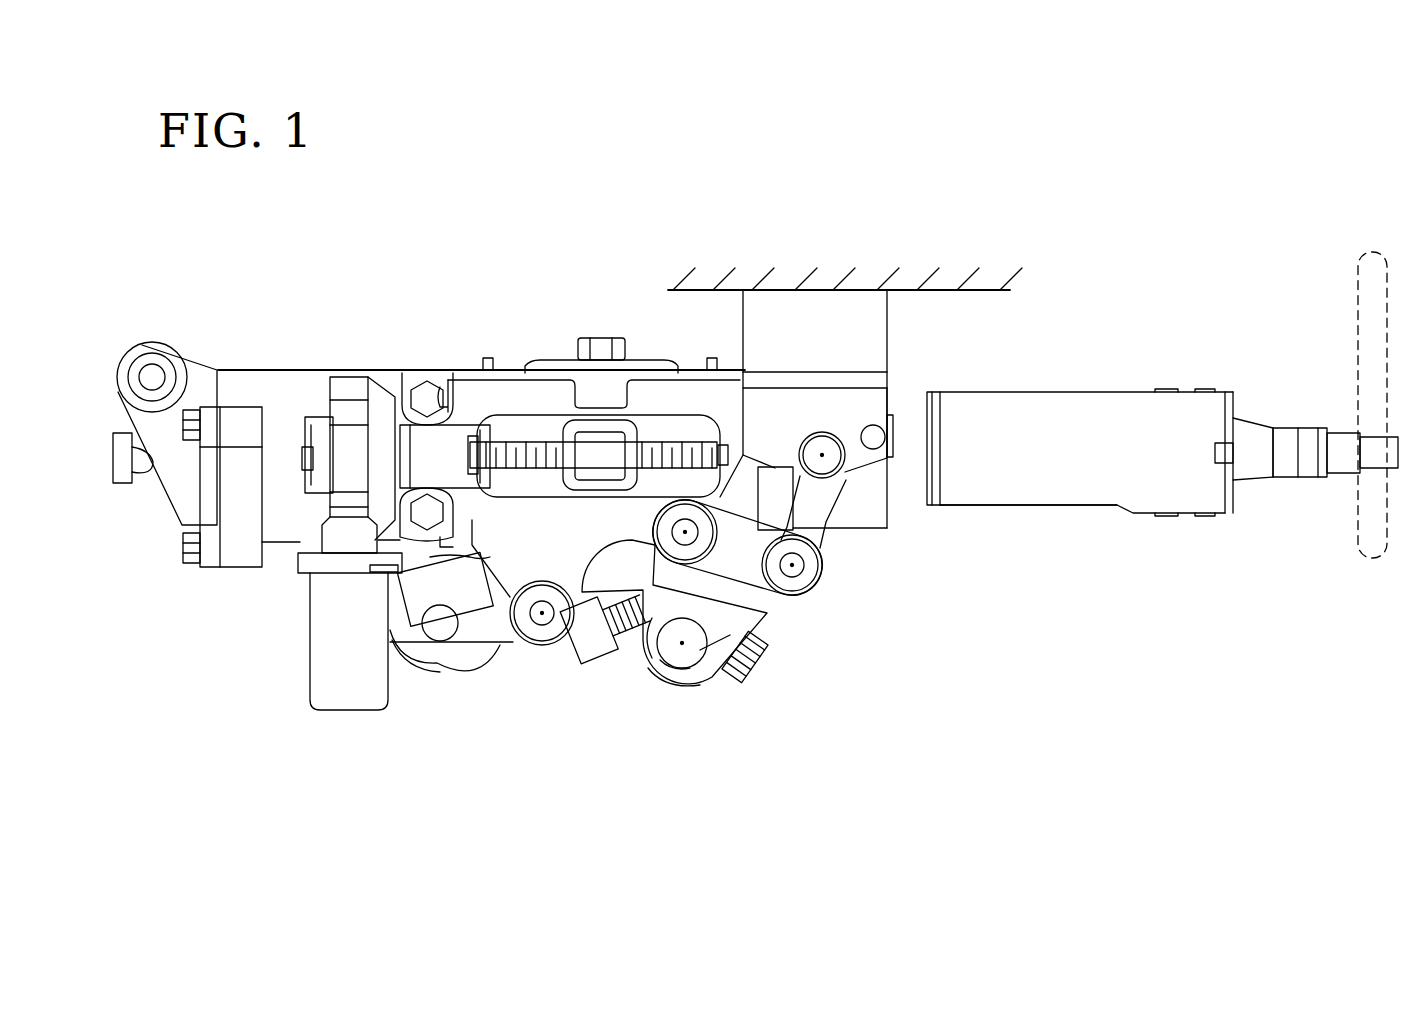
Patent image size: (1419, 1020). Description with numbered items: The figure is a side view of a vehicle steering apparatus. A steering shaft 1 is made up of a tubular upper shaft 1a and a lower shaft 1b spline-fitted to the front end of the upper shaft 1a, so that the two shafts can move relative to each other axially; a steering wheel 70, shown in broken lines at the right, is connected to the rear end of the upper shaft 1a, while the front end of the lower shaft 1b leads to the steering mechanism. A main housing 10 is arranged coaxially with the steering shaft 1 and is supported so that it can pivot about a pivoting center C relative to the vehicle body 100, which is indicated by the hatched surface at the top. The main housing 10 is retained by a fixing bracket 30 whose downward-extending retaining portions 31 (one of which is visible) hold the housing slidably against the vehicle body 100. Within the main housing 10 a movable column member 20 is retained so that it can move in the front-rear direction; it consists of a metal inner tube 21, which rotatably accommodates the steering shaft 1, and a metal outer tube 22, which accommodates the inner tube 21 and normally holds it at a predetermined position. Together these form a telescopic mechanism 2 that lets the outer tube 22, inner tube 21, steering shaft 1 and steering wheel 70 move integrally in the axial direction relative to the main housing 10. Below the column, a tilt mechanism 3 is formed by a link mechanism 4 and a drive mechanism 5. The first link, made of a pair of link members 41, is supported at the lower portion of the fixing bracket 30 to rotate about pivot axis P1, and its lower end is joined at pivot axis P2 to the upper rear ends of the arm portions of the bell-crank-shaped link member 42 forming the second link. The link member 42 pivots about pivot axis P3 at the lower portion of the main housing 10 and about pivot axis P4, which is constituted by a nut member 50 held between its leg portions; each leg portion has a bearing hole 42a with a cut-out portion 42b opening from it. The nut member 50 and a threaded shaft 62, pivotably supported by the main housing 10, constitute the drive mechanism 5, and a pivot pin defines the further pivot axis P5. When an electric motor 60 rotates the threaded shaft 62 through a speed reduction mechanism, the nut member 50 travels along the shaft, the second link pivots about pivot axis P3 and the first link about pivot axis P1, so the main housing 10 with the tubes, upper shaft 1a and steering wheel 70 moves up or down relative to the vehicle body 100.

The steering shaft 1 is at (1259, 406).
The upper shaft 1a is at (1288, 468).
The lower shaft 1b is at (122, 484).
The telescopic mechanism 2 is at (389, 360).
The tilt mechanism 3 is at (858, 606).
The link mechanism 4 is at (832, 581).
The drive mechanism 5 is at (678, 710).
The main housing 10 is at (297, 360).
The movable column member 20 is at (1043, 382).
The inner tube 21 is at (1062, 480).
The outer tube 22 is at (493, 427).
The fixing bracket 30 is at (820, 308).
The retaining portion 31 is at (863, 408).
The link member 41 is at (811, 508).
The link member 42 is at (745, 618).
The bearing hole 42a is at (657, 640).
The cut-out portion 42b is at (684, 668).
The nut member 50 is at (688, 660).
The electric motor 60 is at (416, 670).
The threaded shaft 62 is at (610, 643).
The steering wheel 70 is at (1363, 252).
The vehicle body 100 is at (700, 290).
The pivoting center C is at (153, 375).
The pivot axis P1 is at (823, 456).
The pivot axis P2 is at (793, 567).
The pivot axis P3 is at (686, 534).
The pivot axis P4 is at (681, 645).
The pivot axis P5 is at (542, 615).